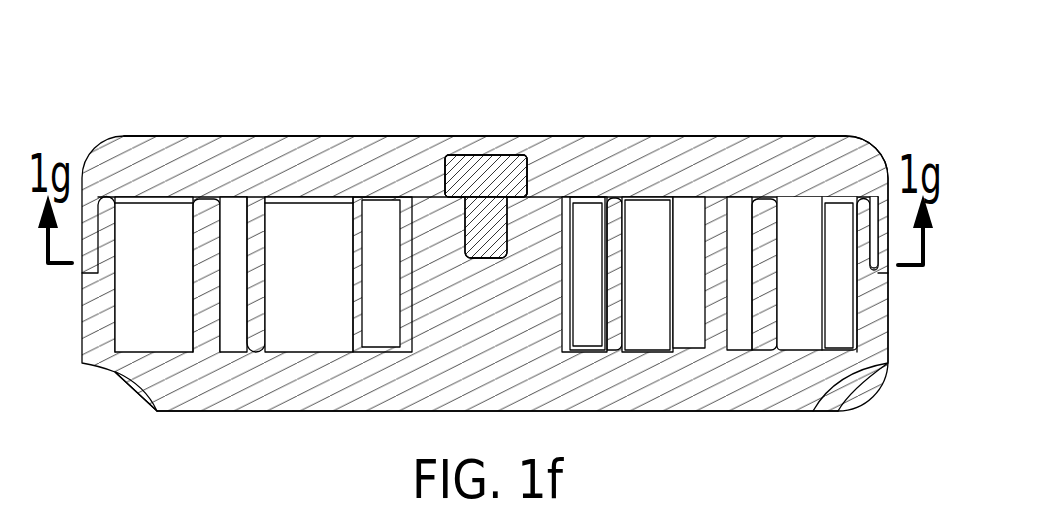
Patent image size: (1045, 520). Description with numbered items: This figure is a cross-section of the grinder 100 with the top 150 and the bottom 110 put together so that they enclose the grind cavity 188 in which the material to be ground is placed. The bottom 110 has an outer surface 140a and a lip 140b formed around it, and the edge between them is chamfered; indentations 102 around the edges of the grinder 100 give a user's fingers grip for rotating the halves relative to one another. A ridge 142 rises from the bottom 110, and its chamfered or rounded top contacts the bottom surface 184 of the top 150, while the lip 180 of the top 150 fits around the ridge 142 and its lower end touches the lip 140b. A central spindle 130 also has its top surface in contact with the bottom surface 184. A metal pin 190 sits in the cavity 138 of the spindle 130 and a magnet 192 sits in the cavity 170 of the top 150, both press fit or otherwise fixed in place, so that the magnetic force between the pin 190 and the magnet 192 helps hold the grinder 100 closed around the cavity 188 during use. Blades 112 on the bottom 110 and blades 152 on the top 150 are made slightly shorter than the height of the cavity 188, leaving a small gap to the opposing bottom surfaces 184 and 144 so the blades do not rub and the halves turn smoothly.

The grinder 100 is at (815, 93).
The indentations 102 is at (130, 382).
The bottom 110 is at (197, 412).
The blades 112 is at (195, 283).
The spindle 130 is at (435, 322).
The cavity of spindle 138 is at (487, 260).
The outer surface of bottom 140a is at (82, 332).
The lip of bottom 140b is at (883, 273).
The ridge 142 is at (865, 215).
The bottom surface 144 is at (642, 355).
The top 150 is at (178, 137).
The blades 152 is at (258, 268).
The cavity 170 is at (458, 155).
The lip of top 180 is at (882, 240).
The bottom surface of top 184 is at (688, 197).
The grind cavity 188 is at (315, 327).
The metal pin 190 is at (473, 218).
The magnet 192 is at (495, 170).